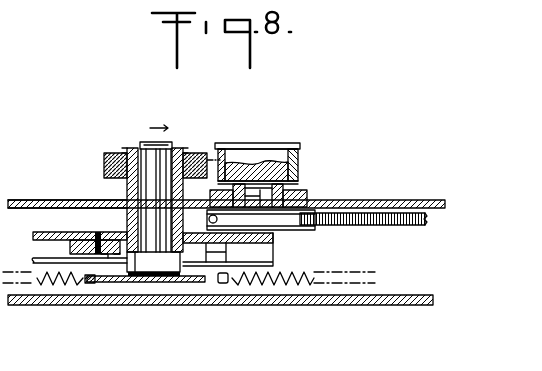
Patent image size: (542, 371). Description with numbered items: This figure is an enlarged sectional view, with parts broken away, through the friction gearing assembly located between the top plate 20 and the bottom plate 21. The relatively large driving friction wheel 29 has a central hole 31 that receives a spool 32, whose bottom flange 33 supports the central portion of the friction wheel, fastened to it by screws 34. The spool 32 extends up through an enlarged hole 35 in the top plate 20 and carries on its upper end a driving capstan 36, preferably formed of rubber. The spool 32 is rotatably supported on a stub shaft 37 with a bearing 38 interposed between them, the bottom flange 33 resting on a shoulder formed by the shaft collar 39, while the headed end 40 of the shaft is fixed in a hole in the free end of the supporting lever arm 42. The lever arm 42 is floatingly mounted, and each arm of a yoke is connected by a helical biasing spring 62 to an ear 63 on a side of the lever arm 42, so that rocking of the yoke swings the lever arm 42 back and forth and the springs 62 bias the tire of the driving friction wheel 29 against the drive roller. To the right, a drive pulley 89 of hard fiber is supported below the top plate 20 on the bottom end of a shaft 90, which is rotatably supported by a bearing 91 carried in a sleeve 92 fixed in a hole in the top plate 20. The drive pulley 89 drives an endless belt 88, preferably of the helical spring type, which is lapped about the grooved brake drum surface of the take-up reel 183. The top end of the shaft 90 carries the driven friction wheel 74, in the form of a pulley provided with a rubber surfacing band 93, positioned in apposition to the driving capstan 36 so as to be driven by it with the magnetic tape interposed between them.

The top plate 20 is at (385, 205).
The bottom plate 21 is at (402, 303).
The driving friction wheel 29 is at (273, 237).
The central hole 31 is at (127, 226).
The spool 32 is at (192, 152).
The bottom flange 33 is at (85, 234).
The screws 34 is at (90, 248).
The enlarged hole 35 is at (110, 200).
The driving capstan 36 is at (110, 154).
The stub shaft 37 is at (142, 158).
The bearing 38 is at (167, 146).
The shaft collar 39 is at (153, 262).
The headed end 40 is at (175, 282).
The supporting lever arm 42 is at (130, 283).
The helical biasing spring 62 is at (62, 288).
The ear 63 is at (90, 286).
The driven friction wheel 74 is at (258, 144).
The endless belt 88 is at (375, 224).
The drive pulley 89 is at (305, 229).
The shaft 90 is at (286, 160).
The bearing 91 is at (296, 177).
The sleeve 92 is at (306, 198).
The surfacing band 93 is at (300, 163).
The take-up reel 183 is at (14, 127).